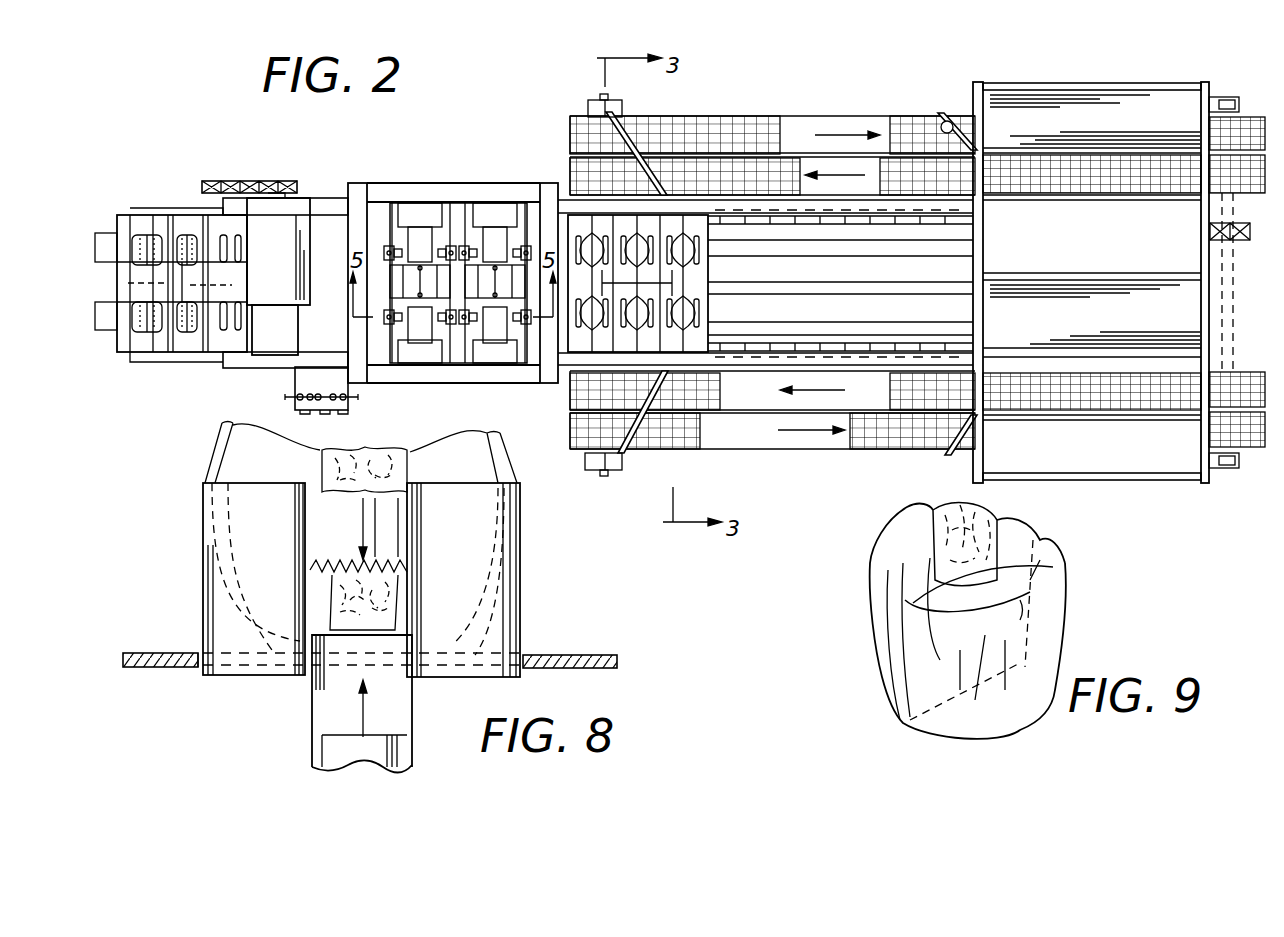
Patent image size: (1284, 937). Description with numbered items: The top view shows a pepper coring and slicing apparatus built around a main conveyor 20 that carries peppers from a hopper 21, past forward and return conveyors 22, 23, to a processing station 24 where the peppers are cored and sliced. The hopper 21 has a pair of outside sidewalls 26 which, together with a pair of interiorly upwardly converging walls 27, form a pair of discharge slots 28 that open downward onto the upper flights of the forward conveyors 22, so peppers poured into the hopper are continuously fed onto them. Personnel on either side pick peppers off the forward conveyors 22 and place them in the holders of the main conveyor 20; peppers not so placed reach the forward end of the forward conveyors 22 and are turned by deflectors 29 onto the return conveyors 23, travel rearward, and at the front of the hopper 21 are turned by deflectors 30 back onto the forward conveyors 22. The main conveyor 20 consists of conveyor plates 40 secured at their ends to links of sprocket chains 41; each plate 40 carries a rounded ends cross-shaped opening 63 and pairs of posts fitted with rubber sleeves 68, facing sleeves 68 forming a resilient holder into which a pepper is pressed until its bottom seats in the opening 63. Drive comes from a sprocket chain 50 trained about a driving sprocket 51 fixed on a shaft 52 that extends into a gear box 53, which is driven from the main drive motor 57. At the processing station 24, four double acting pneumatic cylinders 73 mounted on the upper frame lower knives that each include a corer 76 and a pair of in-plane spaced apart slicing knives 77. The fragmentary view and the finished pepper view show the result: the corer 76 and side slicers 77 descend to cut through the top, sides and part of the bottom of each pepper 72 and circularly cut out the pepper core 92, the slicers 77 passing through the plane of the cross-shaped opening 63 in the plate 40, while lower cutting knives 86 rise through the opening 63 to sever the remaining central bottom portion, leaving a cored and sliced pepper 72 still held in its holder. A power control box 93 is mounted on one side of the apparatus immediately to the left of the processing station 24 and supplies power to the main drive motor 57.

In FIG. 2, the main conveyor 20 is at (656, 283).
In FIG. 2, the hopper 21 is at (1097, 283).
In FIG. 2, the forward conveyor 22 is at (573, 178).
In FIG. 2, the return conveyor 23 is at (572, 133).
In FIG. 2, the processing station 24 is at (459, 187).
In FIG. 2, the outside sidewall 26 is at (1092, 108).
In FIG. 2, the interiorly upwardly converging wall 27 is at (995, 251).
In FIG. 2, the discharge slot 28 is at (1123, 182).
In FIG. 2, the deflector 29 is at (638, 136).
In FIG. 2, the deflector 30 is at (942, 130).
In FIG. 2, the conveyor plate 40 is at (704, 314).
In FIG. 8, the conveyor plate 40 is at (577, 652).
In FIG. 2, the sprocket chain 41 is at (875, 222).
In FIG. 2, the sprocket chain 50 is at (229, 172).
In FIG. 2, the driving sprocket 51 is at (295, 160).
In FIG. 2, the shaft 52 is at (267, 198).
In FIG. 2, the gear box 53 is at (283, 293).
In FIG. 2, the main drive motor 57 is at (137, 284).
In FIG. 8, the rounded ends cross-shaped opening 63 is at (198, 666).
In FIG. 2, the rubber sleeve 68 is at (112, 230).
In FIG. 8, the pepper 72 is at (227, 446).
In FIG. 9, the pepper 72 is at (884, 568).
In FIG. 2, the double acting pneumatic cylinder 73 is at (430, 212).
In FIG. 8, the corer 76 is at (397, 521).
In FIG. 8, the slicing knife 77 is at (220, 607).
In FIG. 8, the lower slicing knife blade 86 is at (326, 690).
In FIG. 8, the pepper core 92 is at (328, 463).
In FIG. 9, the pepper core 92 is at (936, 504).
In FIG. 2, the power control box 93 is at (300, 382).